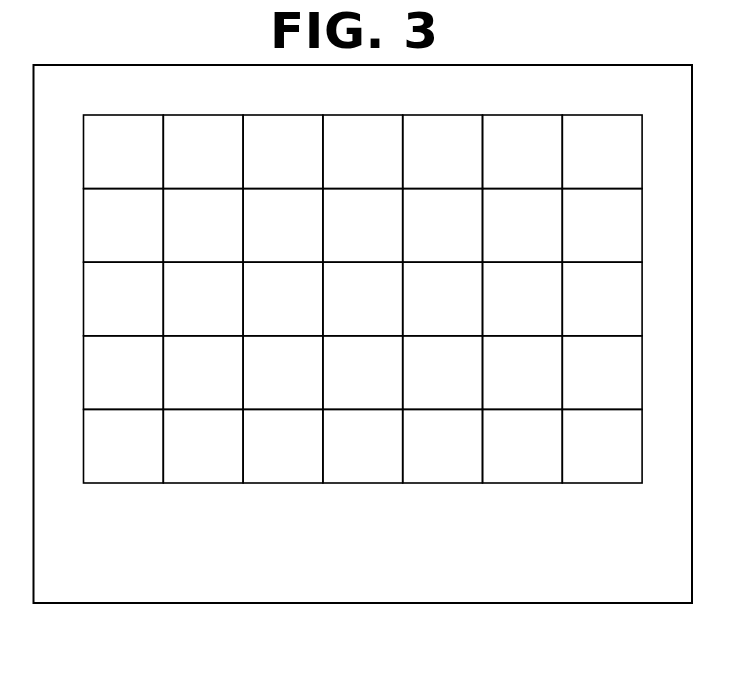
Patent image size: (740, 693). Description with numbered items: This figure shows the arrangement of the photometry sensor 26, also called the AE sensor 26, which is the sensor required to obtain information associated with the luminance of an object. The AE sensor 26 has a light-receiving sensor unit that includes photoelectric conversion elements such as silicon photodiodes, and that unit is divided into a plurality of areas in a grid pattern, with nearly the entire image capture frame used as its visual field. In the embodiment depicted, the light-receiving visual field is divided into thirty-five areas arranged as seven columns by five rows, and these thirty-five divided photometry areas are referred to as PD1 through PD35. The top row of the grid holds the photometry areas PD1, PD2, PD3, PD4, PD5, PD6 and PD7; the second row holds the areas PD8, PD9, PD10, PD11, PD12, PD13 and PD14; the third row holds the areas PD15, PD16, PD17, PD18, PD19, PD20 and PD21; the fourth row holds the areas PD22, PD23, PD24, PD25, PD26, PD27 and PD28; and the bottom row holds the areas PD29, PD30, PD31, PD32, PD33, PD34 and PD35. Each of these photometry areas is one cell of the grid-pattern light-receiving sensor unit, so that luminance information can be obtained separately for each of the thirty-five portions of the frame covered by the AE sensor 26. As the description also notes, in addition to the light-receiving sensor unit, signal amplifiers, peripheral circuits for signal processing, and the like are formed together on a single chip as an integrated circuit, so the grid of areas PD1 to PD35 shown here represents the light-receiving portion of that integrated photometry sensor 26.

The photometry sensor 26 is at (572, 592).
The photometry area PD1 is at (124, 152).
The photometry area PD2 is at (203, 152).
The photometry area PD3 is at (283, 152).
The photometry area PD4 is at (363, 152).
The photometry area PD5 is at (443, 152).
The photometry area PD6 is at (523, 152).
The photometry area PD7 is at (602, 152).
The photometry area PD8 is at (124, 226).
The photometry area PD9 is at (203, 226).
The photometry area PD10 is at (283, 226).
The photometry area PD11 is at (363, 226).
The photometry area PD12 is at (443, 226).
The photometry area PD13 is at (523, 226).
The photometry area PD14 is at (602, 226).
The photometry area PD15 is at (124, 299).
The photometry area PD16 is at (203, 299).
The photometry area PD17 is at (283, 299).
The photometry area PD18 is at (363, 299).
The photometry area PD19 is at (443, 299).
The photometry area PD20 is at (523, 299).
The photometry area PD21 is at (602, 299).
The photometry area PD22 is at (124, 373).
The photometry area PD23 is at (203, 373).
The photometry area PD24 is at (283, 373).
The photometry area PD25 is at (363, 373).
The photometry area PD26 is at (443, 373).
The photometry area PD27 is at (523, 373).
The photometry area PD28 is at (602, 373).
The photometry area PD29 is at (124, 446).
The photometry area PD30 is at (203, 446).
The photometry area PD31 is at (283, 446).
The photometry area PD32 is at (363, 446).
The photometry area PD33 is at (443, 446).
The photometry area PD34 is at (523, 446).
The photometry area PD35 is at (602, 446).